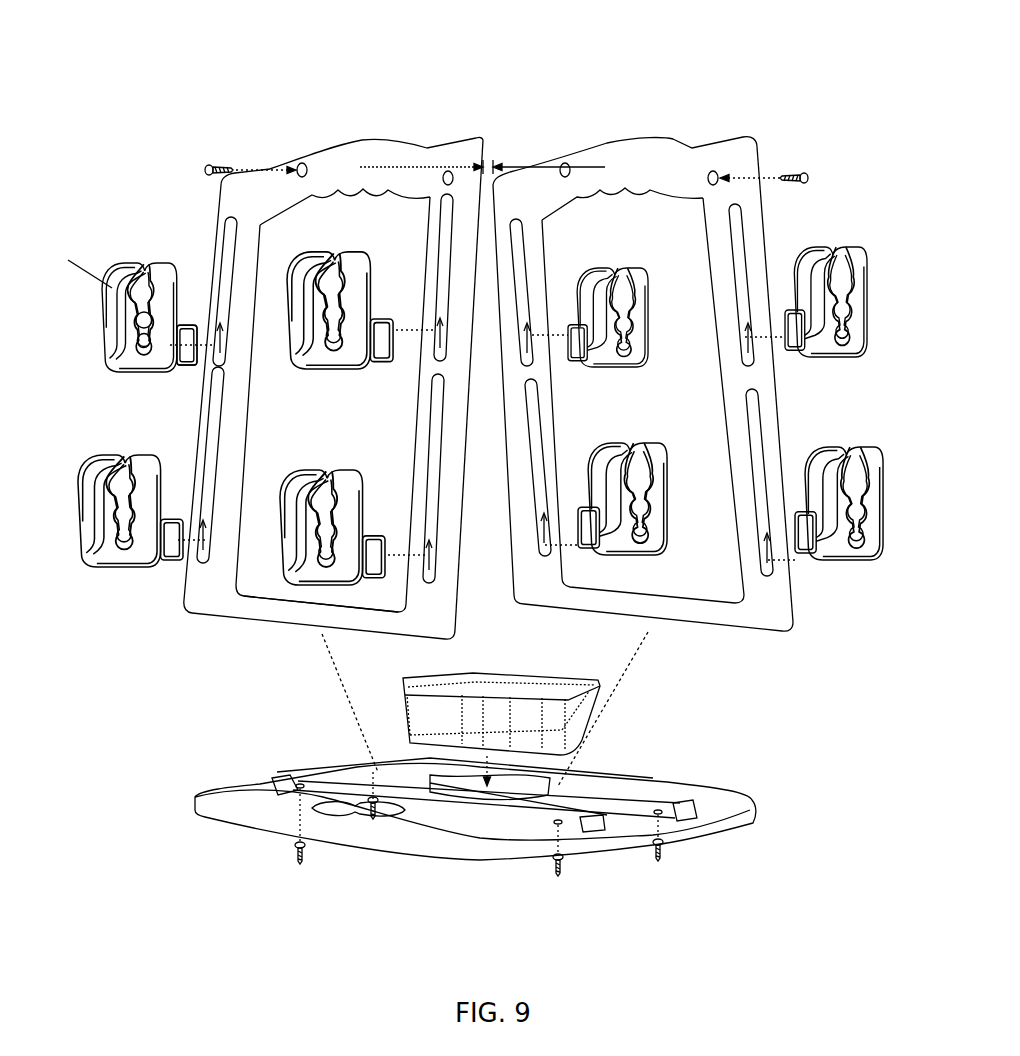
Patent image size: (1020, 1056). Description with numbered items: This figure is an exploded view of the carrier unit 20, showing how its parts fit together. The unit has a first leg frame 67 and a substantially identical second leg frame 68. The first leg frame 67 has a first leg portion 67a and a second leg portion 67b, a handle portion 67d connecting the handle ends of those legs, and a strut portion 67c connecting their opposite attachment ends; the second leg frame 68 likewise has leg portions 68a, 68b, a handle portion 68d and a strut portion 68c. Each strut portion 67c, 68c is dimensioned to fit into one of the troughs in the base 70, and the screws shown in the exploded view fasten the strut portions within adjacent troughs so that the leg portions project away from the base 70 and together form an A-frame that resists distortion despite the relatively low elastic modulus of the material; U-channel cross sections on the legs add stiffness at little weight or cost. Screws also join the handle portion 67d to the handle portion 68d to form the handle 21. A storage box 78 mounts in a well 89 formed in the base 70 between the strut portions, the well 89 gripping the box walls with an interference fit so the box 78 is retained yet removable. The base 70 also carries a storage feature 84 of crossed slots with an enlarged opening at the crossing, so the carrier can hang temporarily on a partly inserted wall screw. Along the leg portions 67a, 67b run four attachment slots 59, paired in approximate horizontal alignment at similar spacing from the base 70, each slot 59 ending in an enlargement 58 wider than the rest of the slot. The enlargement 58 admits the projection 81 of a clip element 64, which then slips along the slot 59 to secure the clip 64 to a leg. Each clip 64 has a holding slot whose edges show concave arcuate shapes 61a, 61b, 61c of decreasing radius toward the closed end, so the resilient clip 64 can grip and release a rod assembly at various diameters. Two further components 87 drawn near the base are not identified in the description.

The carrier unit 20 is at (542, 92).
The handle 21 is at (342, 152).
The enlargement 58 is at (770, 565).
The attachment slot 59 is at (762, 232).
The slot edge shape 61a is at (148, 288).
The slot edge shape 61b is at (137, 326).
The slot edge shape 61c is at (141, 345).
The clip element 64 is at (818, 343).
The first leg frame 67 is at (447, 128).
The first leg portion 67a is at (427, 608).
The second leg portion 67b is at (217, 570).
The strut portion 67c is at (252, 612).
The handle portion 67d is at (317, 160).
The second leg frame 68 is at (701, 128).
The leg portion 68a is at (760, 597).
The leg portion 68b is at (535, 562).
The strut portion 68c is at (680, 608).
The handle portion 68d is at (632, 158).
The base 70 is at (245, 820).
The storage box 78 is at (578, 718).
The projection 81 is at (193, 330).
The storage feature 84 is at (345, 810).
The rail bracket 87 is at (293, 778).
The well 89 is at (470, 797).